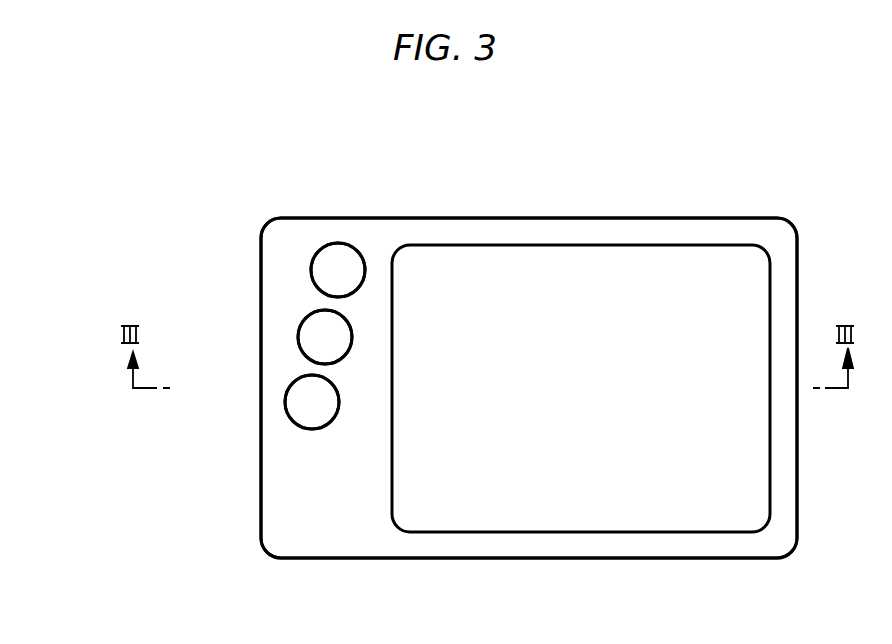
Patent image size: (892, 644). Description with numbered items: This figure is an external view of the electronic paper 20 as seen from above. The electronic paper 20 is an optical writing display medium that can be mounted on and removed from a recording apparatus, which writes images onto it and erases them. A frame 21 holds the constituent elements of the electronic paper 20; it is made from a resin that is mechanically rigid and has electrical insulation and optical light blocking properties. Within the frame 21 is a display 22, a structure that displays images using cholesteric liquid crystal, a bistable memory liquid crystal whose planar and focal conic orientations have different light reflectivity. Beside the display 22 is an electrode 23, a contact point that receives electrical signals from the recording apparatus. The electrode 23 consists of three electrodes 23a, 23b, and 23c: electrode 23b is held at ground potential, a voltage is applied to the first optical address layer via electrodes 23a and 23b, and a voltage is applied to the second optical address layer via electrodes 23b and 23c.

The electronic paper 20 is at (545, 218).
The frame 21 is at (708, 545).
The display 22 is at (577, 515).
The electrode 23 is at (203, 427).
The electrode 23a is at (318, 274).
The electrode 23b is at (306, 341).
The electrode 23c is at (298, 406).